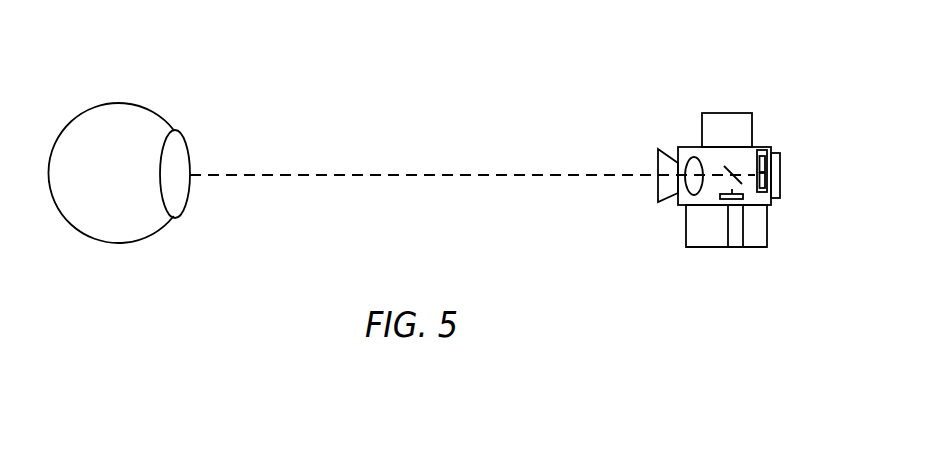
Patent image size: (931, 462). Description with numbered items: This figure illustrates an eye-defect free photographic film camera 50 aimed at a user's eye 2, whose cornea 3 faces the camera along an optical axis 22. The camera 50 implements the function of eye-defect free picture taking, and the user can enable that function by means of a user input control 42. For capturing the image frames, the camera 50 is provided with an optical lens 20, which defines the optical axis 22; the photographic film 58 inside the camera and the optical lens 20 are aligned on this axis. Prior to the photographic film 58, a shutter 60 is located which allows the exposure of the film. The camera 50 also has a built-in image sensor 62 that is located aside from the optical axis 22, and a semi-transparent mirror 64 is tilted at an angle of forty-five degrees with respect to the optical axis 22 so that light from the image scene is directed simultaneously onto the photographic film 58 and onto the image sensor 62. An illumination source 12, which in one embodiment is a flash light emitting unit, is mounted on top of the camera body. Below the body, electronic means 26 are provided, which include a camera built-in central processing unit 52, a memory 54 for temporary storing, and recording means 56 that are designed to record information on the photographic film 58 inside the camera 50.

The eye 2 is at (133, 228).
The cornea 3 is at (177, 149).
The optical axis 22 is at (520, 177).
The photographic film camera 50 is at (678, 128).
The illumination source 12 is at (728, 118).
The optical lens 20 is at (693, 189).
The semi-transparent mirror 64 is at (724, 168).
The shutter 60 is at (745, 168).
The image sensor 62 is at (718, 203).
The photographic film 58 is at (760, 151).
The user input control 42 is at (781, 177).
The electronic means 26 is at (783, 231).
The central processing unit 52 is at (757, 242).
The memory 54 is at (737, 248).
The recording means 56 is at (710, 248).